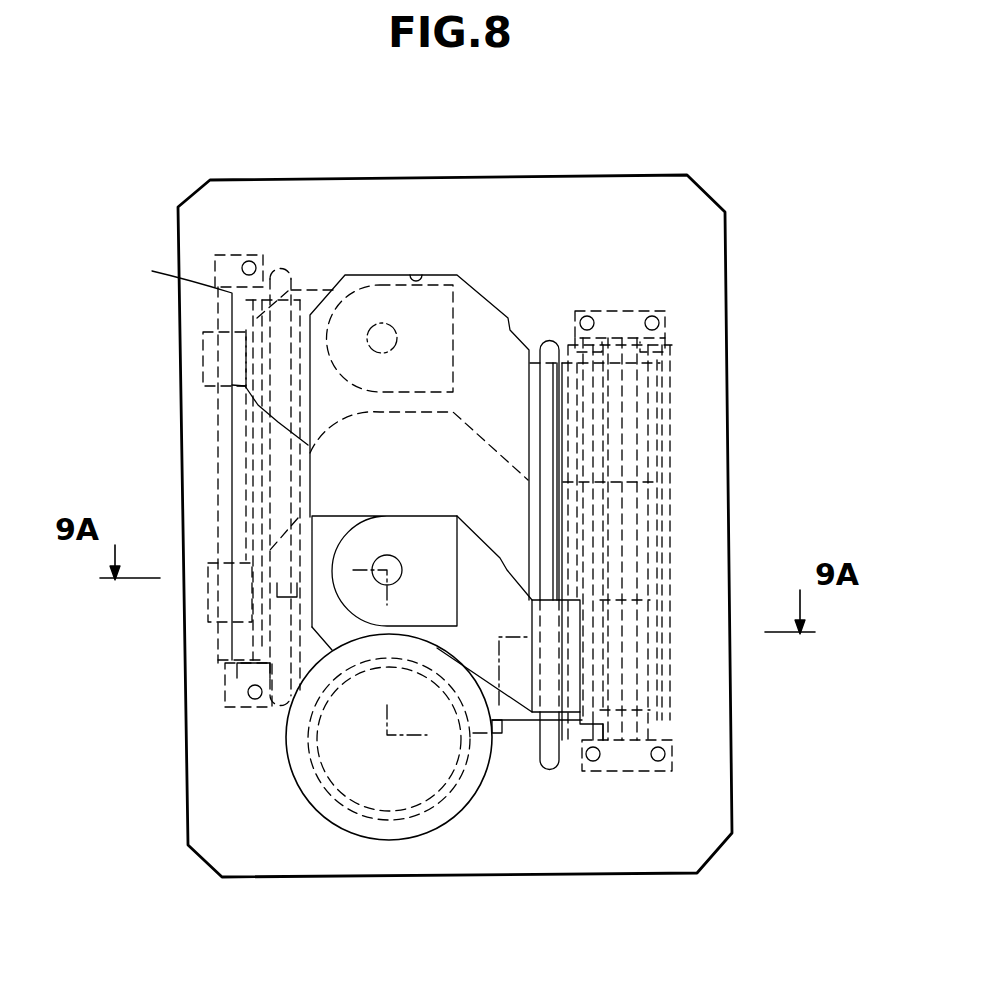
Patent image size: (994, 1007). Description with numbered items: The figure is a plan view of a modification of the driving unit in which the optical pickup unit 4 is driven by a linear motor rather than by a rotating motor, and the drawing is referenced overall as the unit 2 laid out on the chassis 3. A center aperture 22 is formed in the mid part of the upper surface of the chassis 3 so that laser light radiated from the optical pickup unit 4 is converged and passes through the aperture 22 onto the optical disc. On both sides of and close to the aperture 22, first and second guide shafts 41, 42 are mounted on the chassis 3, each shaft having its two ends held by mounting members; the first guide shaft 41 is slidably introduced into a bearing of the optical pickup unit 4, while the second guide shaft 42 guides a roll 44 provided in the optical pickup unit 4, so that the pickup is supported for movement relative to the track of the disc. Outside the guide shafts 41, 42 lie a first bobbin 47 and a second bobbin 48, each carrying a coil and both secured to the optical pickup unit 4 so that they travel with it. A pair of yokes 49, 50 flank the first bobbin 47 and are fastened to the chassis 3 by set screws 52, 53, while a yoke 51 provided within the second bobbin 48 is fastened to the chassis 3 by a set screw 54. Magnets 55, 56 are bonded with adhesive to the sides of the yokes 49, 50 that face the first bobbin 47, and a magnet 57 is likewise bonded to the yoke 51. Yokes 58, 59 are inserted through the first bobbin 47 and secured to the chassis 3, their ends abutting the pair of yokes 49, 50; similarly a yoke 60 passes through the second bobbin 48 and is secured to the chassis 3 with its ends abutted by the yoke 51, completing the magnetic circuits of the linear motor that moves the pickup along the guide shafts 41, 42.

The camera 2 is at (632, 150).
The chassis 3 is at (678, 202).
The optical pickup unit 4 is at (520, 590).
The center aperture 22 is at (415, 272).
The first guide shaft 41 is at (547, 747).
The second guide shaft 42 is at (280, 705).
The roll 44 is at (290, 590).
The first bobbin 47 is at (657, 698).
The second bobbin 48 is at (213, 593).
The yoke 49 is at (663, 362).
The yoke 50 is at (603, 772).
The yoke 51 is at (215, 265).
The set screw 52 is at (657, 322).
The set screw 53 is at (588, 315).
The set screw 54 is at (243, 263).
The magnet 55 is at (657, 423).
The magnet 56 is at (582, 765).
The magnet 57 is at (245, 655).
The yoke 58 is at (637, 772).
The yoke 59 is at (623, 772).
The yoke 60 is at (217, 317).